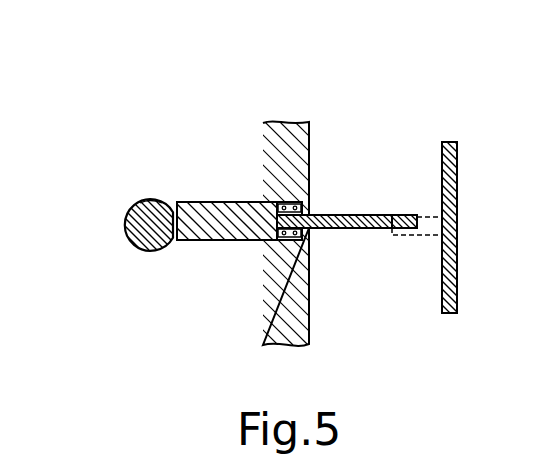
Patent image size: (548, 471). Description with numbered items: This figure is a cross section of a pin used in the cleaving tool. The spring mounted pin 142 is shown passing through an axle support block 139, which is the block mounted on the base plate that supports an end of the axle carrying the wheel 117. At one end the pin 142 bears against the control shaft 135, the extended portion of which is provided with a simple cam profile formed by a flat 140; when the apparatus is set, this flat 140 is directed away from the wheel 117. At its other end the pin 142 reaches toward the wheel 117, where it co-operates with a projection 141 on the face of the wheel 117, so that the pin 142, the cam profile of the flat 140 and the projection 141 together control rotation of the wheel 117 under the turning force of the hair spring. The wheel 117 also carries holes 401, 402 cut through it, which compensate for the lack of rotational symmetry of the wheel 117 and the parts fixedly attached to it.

The wheel 117 is at (457, 178).
The control shaft 135 is at (131, 241).
The axle support block 139 is at (283, 128).
The flat 140 is at (153, 200).
The projection 141 is at (425, 236).
The spring mounted pin 142 is at (209, 218).
The hole 401 is at (276, 204).
The hole 402 is at (279, 243).